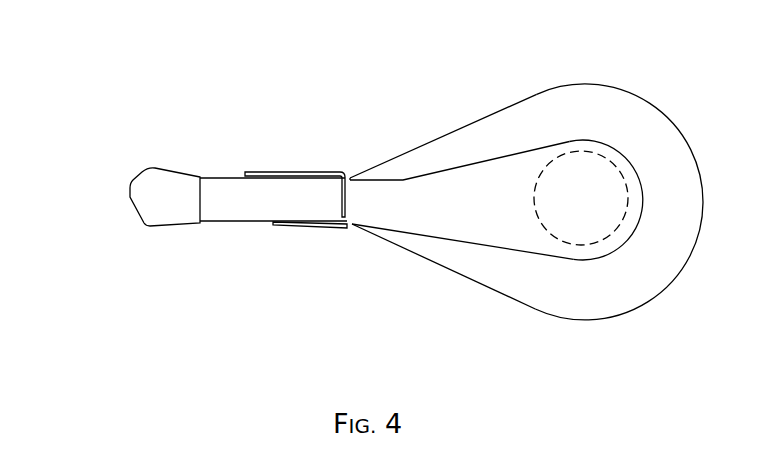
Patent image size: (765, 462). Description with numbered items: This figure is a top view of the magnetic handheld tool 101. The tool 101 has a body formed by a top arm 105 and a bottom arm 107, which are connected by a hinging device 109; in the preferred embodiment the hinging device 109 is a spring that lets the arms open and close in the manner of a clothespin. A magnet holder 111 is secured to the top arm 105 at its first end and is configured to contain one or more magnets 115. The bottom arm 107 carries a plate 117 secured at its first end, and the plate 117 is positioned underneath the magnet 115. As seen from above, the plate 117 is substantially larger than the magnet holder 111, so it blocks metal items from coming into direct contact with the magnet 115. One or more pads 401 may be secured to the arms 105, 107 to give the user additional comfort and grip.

The tool 101 is at (125, 50).
The pad 401 is at (180, 168).
The bottom arm 107 is at (385, 243).
The hinging device 109 is at (298, 174).
The top arm 105 is at (410, 179).
The plate 117 is at (573, 322).
The magnet holder 111 is at (575, 140).
The magnet 115 is at (586, 245).